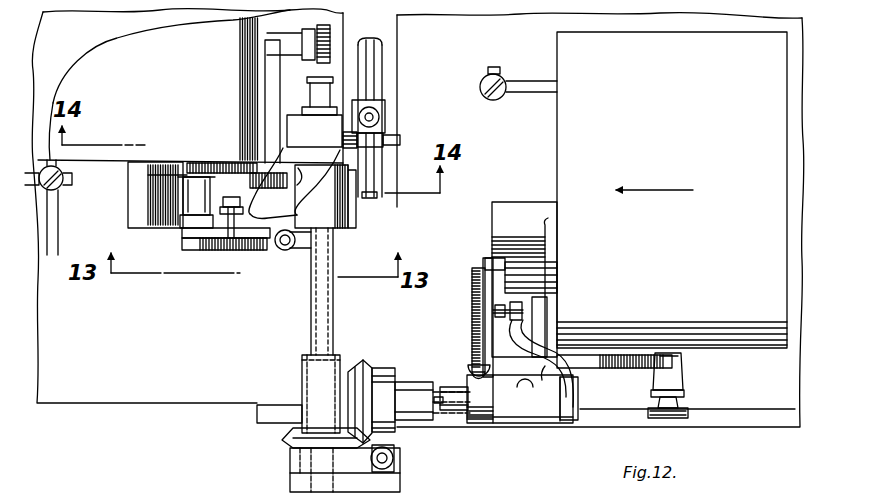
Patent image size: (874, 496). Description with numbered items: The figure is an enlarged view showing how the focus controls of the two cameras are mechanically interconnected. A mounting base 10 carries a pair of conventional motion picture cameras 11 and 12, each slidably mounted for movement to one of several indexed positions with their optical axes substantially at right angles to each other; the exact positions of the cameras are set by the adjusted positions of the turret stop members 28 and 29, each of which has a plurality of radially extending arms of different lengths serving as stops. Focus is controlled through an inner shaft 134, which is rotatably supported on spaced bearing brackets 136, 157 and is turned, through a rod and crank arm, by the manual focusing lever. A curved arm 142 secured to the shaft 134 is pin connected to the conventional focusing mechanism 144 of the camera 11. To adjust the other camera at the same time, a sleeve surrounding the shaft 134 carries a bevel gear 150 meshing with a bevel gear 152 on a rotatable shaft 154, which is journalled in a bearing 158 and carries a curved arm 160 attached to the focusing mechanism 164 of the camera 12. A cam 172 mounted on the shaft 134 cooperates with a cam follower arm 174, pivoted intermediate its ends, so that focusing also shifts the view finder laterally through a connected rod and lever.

The mounting base 10 is at (138, 395).
The motion picture camera 11 is at (116, 46).
The motion picture camera 12 is at (726, 353).
The turret stop member 28 is at (502, 101).
The turret stop member 29 is at (65, 191).
The inner shaft 134 is at (318, 329).
The bearing bracket 136 is at (310, 386).
The curved arm 142 is at (298, 188).
The focusing mechanism 144 is at (280, 259).
The bevel gear 150 is at (290, 447).
The bevel gear 152 is at (360, 360).
The rotatable shaft 154 is at (455, 402).
The plate 157 is at (349, 221).
The bearing 158 is at (535, 410).
The curved arm 160 is at (548, 376).
The focusing mechanism 164 is at (472, 281).
The cam 172 is at (295, 117).
The cam follower arm 174 is at (376, 153).